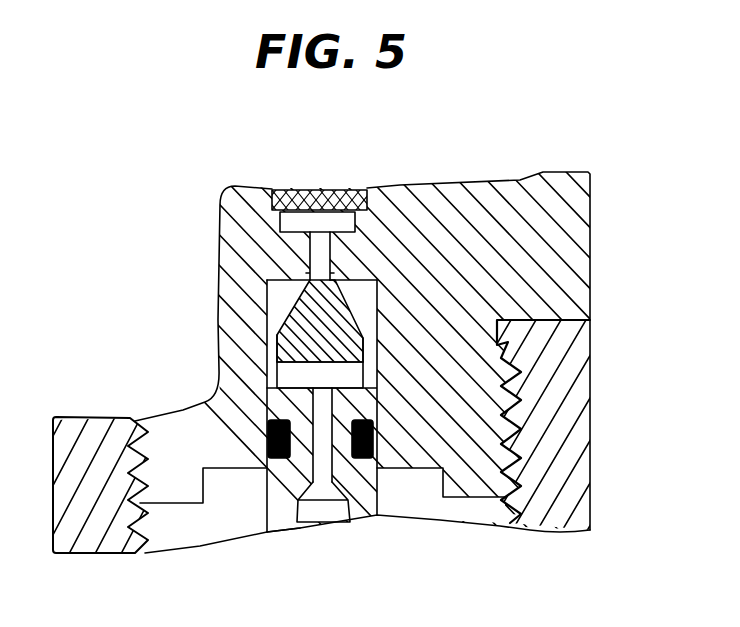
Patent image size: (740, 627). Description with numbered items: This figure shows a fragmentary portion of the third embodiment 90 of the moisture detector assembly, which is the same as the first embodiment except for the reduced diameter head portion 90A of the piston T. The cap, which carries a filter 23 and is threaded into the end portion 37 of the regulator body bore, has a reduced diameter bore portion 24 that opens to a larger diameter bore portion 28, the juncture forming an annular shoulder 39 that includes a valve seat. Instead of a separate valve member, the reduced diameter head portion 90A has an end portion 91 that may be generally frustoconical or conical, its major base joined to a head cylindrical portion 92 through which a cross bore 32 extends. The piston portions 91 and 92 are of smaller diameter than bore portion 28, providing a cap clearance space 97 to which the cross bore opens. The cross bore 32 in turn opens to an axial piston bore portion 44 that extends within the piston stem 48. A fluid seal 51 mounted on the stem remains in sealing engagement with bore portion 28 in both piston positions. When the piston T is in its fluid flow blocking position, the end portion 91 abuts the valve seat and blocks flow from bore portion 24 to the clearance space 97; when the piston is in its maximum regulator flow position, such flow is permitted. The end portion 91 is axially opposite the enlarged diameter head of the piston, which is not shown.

The third embodiment of the moisture detector assembly 90 is at (592, 213).
The reduced diameter bore portion 24 is at (221, 198).
The filter 23 is at (328, 188).
The annular shoulder 39 is at (310, 247).
The cap clearance space 97 is at (287, 283).
The reduced diameter head portion 90A is at (287, 350).
The end portion 91 is at (305, 312).
The larger diameter bore portion 28 is at (290, 335).
The head cylindrical portion 92 is at (347, 342).
The cross bore 32 is at (298, 377).
The end portion of the regulator body bore 37 is at (515, 385).
The fluid seal 51 is at (373, 435).
The axial piston bore portion 44 is at (320, 463).
The piston T is at (360, 512).
The piston stem 48 is at (277, 527).